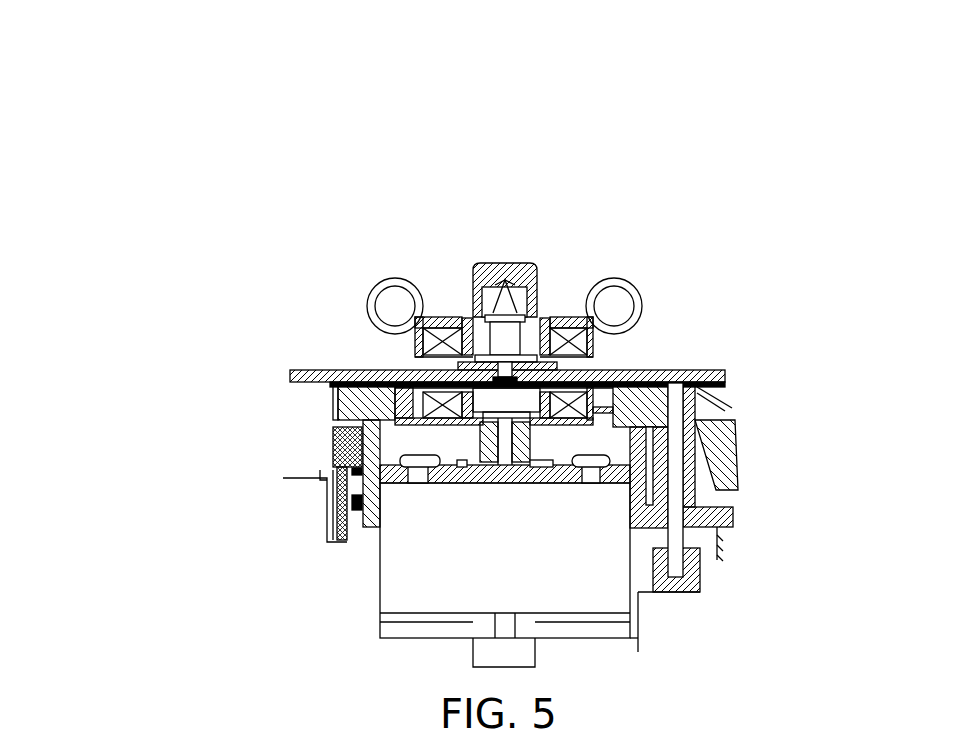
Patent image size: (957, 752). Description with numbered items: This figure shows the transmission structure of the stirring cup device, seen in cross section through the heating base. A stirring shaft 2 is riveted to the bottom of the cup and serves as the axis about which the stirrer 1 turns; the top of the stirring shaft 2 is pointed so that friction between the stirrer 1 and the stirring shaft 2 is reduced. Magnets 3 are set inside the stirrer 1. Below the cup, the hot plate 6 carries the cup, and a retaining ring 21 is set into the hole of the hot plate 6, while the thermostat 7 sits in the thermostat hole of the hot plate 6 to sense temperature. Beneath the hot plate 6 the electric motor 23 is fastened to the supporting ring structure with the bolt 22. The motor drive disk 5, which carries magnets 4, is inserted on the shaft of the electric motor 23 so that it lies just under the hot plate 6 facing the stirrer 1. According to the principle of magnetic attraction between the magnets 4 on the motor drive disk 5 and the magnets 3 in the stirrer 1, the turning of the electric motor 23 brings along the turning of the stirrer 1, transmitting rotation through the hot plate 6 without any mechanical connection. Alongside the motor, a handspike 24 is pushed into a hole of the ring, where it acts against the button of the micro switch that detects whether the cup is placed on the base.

The stirrer 1 is at (302, 193).
The stirring shaft 2 is at (296, 250).
The magnet 3 is at (330, 294).
The magnet 4 is at (396, 348).
The motor drive disk 5 is at (698, 240).
The hot plate 6 is at (343, 453).
The thermostat 7 is at (217, 484).
The retaining ring 21 is at (652, 179).
The bolt 22 is at (765, 360).
The electric motor 23 is at (661, 484).
The handspike 24 is at (786, 517).